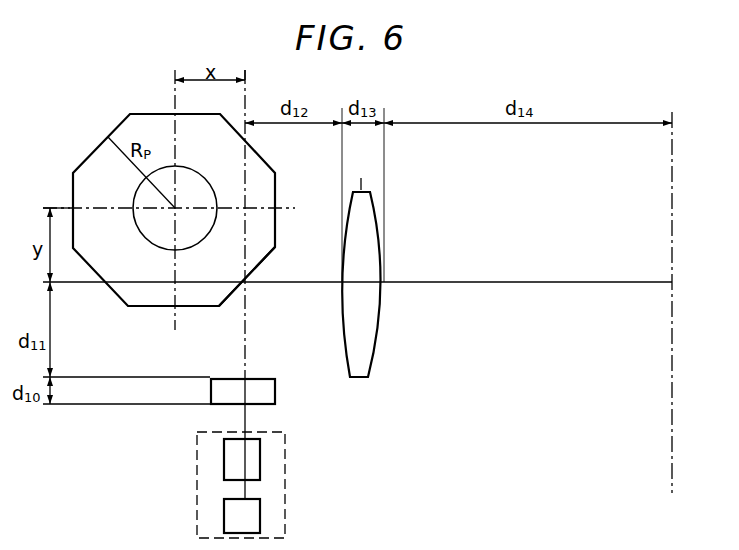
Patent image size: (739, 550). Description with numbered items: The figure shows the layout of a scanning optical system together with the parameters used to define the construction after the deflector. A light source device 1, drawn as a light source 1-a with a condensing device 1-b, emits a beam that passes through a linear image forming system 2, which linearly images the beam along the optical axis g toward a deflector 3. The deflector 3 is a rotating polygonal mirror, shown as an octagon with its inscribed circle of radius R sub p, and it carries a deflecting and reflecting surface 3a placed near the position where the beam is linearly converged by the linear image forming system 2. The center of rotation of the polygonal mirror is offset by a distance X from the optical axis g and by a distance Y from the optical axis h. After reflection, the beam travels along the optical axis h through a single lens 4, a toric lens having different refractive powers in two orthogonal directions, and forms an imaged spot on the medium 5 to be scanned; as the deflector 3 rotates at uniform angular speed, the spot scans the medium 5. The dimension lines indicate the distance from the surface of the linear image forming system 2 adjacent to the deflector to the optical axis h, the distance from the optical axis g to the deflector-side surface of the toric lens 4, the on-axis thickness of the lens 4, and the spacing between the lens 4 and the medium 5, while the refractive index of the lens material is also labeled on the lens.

The light source device 1 is at (196, 522).
The light source 1-a is at (261, 516).
The condensing device 1-b is at (261, 462).
The linear image forming system 2 is at (277, 392).
The deflector 3 is at (126, 125).
The deflecting and reflecting surface 3a is at (265, 256).
The single lens 4 is at (368, 365).
The medium to be scanned 5 is at (670, 399).
The optical axis g is at (245, 332).
The optical axis h is at (461, 284).